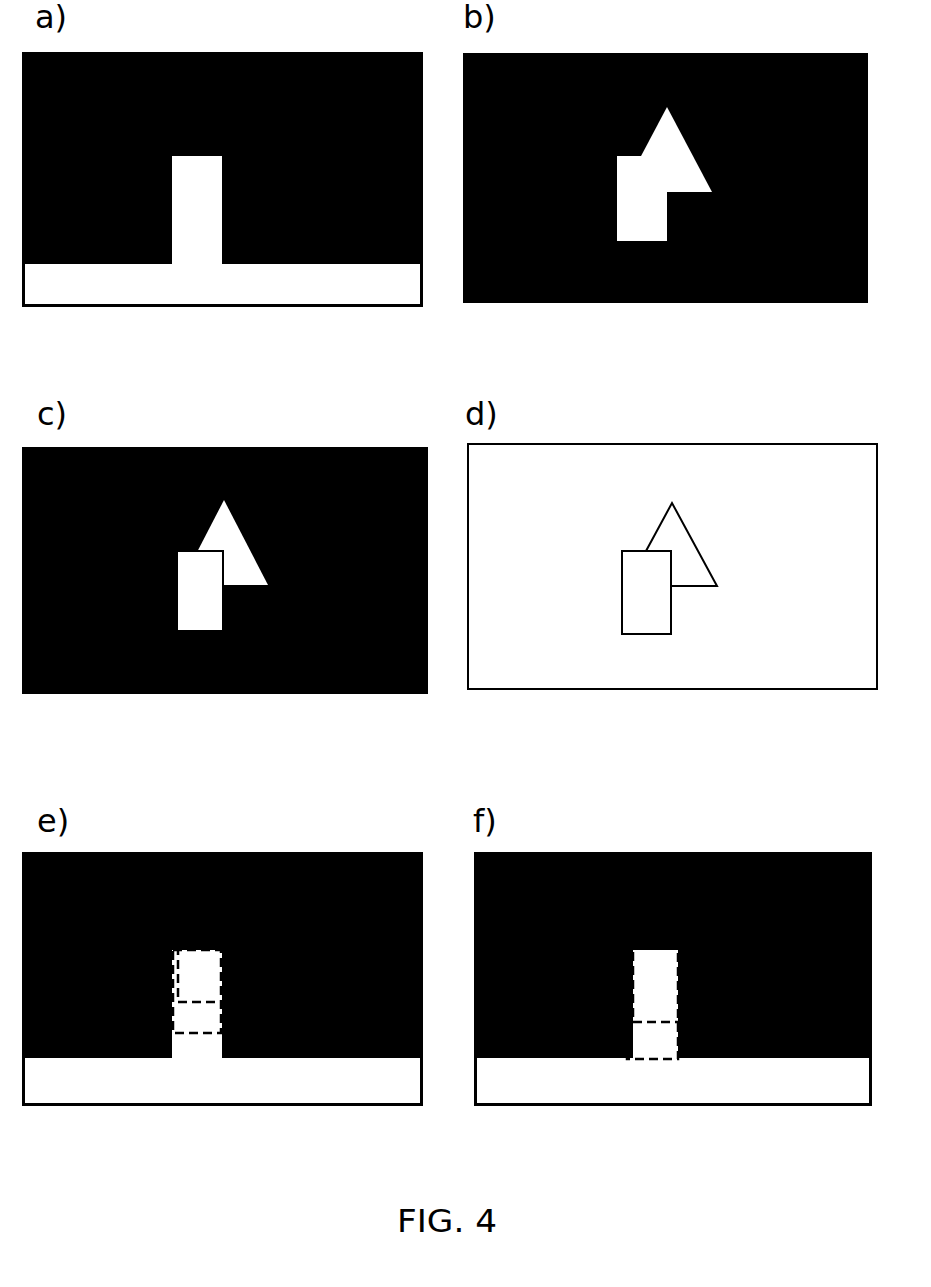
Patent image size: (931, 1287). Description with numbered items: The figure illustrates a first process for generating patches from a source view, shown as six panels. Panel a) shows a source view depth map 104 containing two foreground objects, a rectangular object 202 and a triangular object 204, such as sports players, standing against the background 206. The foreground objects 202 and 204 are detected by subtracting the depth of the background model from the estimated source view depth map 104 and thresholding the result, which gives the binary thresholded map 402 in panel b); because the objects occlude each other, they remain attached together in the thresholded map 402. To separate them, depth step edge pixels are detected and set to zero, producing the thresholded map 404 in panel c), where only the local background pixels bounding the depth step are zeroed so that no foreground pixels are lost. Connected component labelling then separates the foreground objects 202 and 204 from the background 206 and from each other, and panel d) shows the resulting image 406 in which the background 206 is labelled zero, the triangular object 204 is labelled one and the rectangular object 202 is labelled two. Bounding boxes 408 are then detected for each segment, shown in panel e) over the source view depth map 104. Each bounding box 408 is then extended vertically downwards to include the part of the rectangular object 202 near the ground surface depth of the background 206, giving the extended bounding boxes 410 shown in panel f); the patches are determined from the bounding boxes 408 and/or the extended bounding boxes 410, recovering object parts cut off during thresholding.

The source view depth map 104 is at (73, 307).
The rectangular foreground object 202 is at (187, 267).
The triangular foreground object 204 is at (239, 190).
The background 206 is at (358, 262).
The thresholded map 402 is at (668, 303).
The thresholded map with depth step pixels set to zero 404 is at (213, 694).
The labelled segment image 406 is at (667, 689).
The bounding boxes 408 is at (183, 1033).
The extended bounding boxes 410 is at (645, 1059).